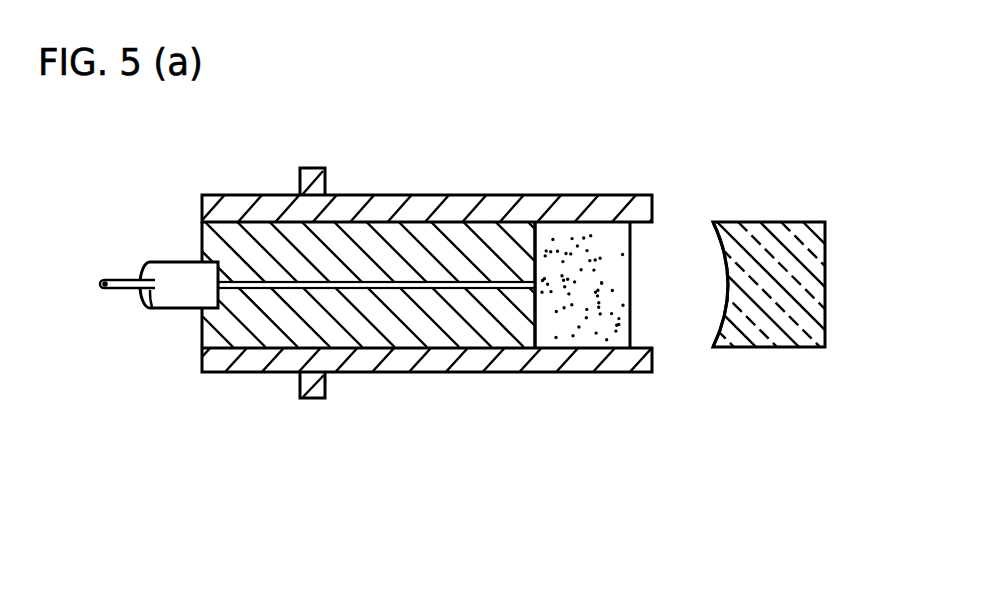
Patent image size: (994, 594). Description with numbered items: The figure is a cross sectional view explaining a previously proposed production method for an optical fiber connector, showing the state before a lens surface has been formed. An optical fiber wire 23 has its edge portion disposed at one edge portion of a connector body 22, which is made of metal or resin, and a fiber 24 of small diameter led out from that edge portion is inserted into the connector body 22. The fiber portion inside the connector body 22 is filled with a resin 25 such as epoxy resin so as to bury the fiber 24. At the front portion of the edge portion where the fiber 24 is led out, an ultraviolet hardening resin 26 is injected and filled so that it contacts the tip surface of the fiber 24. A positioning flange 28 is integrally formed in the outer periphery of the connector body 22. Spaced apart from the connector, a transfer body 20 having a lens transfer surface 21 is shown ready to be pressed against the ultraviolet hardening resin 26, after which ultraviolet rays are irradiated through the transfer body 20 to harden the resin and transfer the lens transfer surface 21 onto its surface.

The transfer body 20 is at (826, 221).
The lens transfer surface 21 is at (708, 315).
The connector body 22 is at (492, 205).
The optical fiber wire 23 is at (175, 308).
The fiber 24 is at (402, 287).
The resin 25 is at (361, 246).
The ultraviolet hardening resin 26 is at (598, 238).
The positioning flange 28 is at (326, 383).